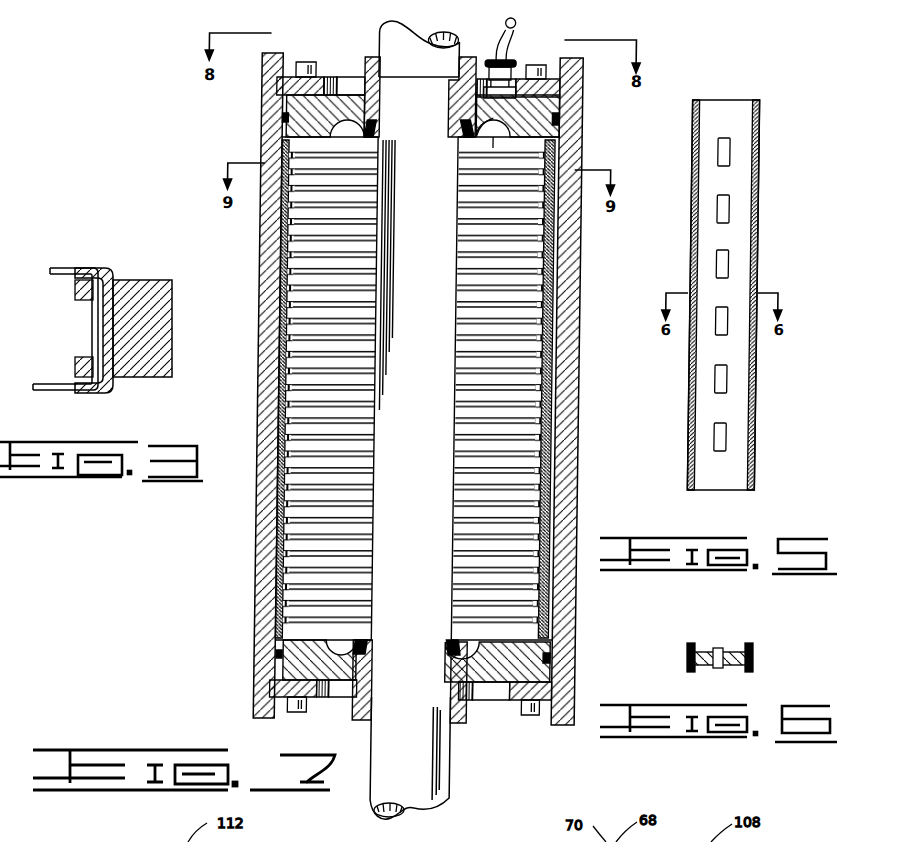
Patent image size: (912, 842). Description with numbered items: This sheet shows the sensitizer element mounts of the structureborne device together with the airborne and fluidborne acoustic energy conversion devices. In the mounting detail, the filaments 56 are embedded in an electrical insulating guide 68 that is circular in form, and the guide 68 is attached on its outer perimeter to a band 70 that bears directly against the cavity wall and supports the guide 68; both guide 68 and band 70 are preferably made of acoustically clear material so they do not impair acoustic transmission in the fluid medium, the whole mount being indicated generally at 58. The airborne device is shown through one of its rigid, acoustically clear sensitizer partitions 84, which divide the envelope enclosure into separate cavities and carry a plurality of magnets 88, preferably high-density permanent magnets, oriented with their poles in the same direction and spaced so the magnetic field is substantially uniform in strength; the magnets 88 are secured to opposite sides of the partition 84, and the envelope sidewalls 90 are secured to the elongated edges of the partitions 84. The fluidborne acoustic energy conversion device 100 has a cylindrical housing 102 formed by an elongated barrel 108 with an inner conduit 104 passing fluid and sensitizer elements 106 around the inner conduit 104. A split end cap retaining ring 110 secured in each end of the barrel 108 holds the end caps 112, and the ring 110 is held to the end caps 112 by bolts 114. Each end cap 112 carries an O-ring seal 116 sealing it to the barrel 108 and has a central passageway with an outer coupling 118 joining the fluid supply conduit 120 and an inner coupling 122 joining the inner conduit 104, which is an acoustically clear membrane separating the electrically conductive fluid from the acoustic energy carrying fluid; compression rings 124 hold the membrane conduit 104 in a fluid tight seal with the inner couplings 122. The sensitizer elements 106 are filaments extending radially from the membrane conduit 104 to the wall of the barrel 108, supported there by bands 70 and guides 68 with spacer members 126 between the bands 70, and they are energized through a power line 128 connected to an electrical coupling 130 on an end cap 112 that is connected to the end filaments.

In FIG. 3, the filaments 56 is at (62, 268).
In FIG. 7, the filaments 56 is at (370, 190).
In FIG. 3, the plate mounting assembly 58 is at (78, 224).
In FIG. 3, the electrical insulating guide 68 is at (106, 270).
In FIG. 7, the electrical insulating guide 68 is at (291, 252).
In FIG. 3, the band 70 is at (165, 318).
In FIG. 7, the band 70 is at (287, 234).
In FIG. 5, the sensitizer partition 84 is at (707, 99).
In FIG. 6, the sensitizer partition 84 is at (702, 668).
In FIG. 5, the magnets 88 is at (732, 262).
In FIG. 6, the magnets 88 is at (719, 648).
In FIG. 6, the sidewalls 90 is at (687, 652).
In FIG. 7, the fluidborne acoustic energy conversion device 100 is at (248, 582).
In FIG. 7, the cylindrical housing 102 is at (244, 700).
In FIG. 7, the inner conduit 104 is at (431, 457).
In FIG. 7, the sensitizer elements 106 is at (474, 631).
In FIG. 7, the barrel 108 is at (274, 146).
In FIG. 7, the split end cap retaining ring 110 is at (291, 77).
In FIG. 7, the end caps 112 is at (333, 110).
In FIG. 7, the bolts 114 is at (540, 65).
In FIG. 7, the O-ring seal 116 is at (283, 118).
In FIG. 7, the outer coupling 118 is at (368, 78).
In FIG. 7, the fluid supply conduit 120 is at (428, 24).
In FIG. 7, the inner coupling 122 is at (476, 139).
In FIG. 7, the compression rings 124 is at (466, 128).
In FIG. 7, the spacer members 126 is at (287, 283).
In FIG. 7, the power line 128 is at (515, 25).
In FIG. 7, the electrical coupling 130 is at (493, 60).